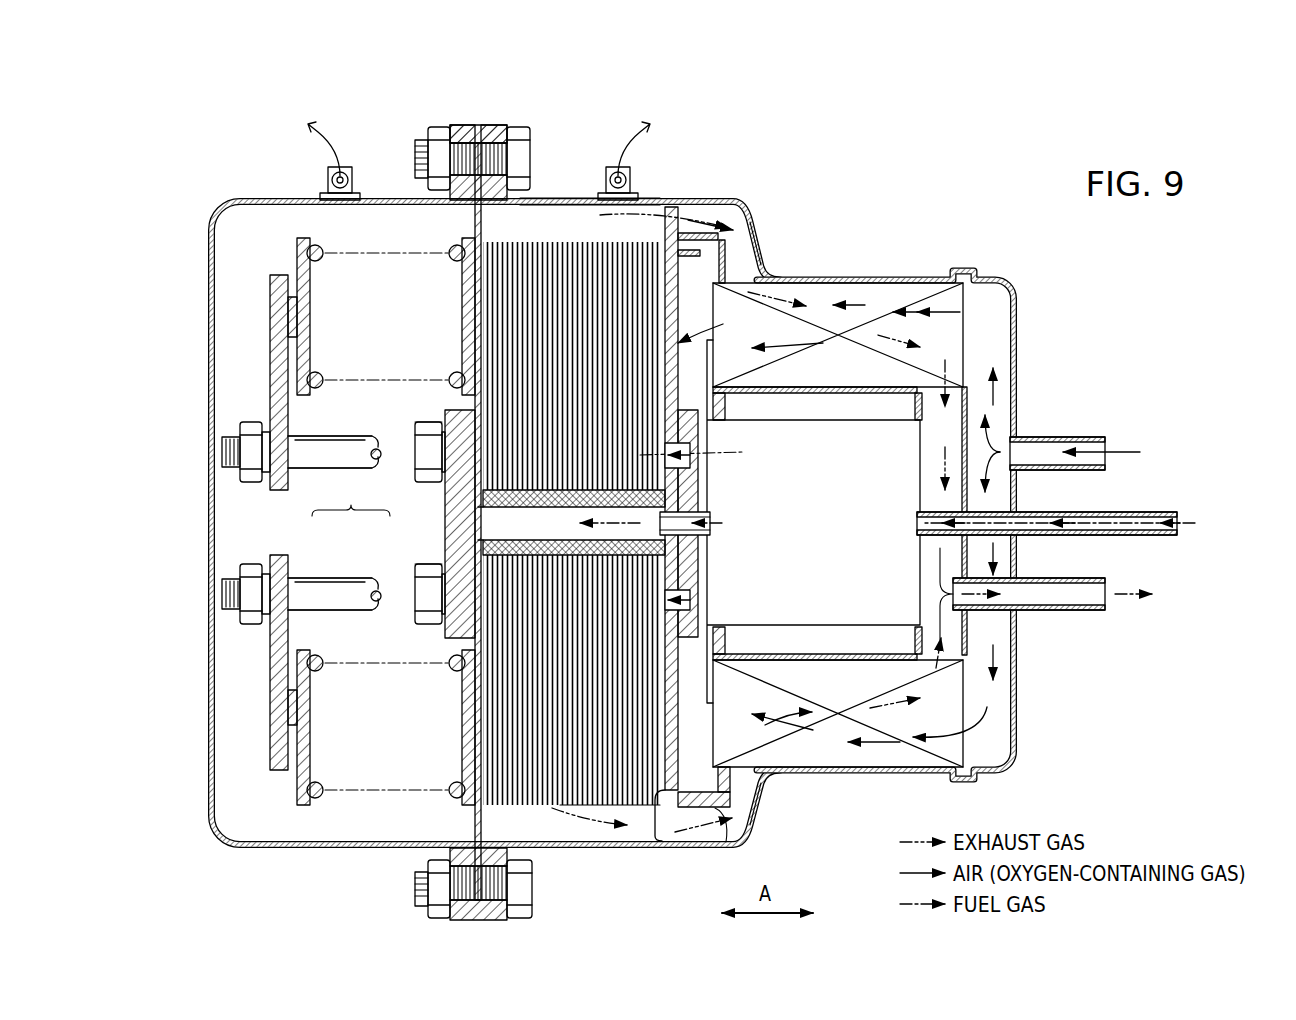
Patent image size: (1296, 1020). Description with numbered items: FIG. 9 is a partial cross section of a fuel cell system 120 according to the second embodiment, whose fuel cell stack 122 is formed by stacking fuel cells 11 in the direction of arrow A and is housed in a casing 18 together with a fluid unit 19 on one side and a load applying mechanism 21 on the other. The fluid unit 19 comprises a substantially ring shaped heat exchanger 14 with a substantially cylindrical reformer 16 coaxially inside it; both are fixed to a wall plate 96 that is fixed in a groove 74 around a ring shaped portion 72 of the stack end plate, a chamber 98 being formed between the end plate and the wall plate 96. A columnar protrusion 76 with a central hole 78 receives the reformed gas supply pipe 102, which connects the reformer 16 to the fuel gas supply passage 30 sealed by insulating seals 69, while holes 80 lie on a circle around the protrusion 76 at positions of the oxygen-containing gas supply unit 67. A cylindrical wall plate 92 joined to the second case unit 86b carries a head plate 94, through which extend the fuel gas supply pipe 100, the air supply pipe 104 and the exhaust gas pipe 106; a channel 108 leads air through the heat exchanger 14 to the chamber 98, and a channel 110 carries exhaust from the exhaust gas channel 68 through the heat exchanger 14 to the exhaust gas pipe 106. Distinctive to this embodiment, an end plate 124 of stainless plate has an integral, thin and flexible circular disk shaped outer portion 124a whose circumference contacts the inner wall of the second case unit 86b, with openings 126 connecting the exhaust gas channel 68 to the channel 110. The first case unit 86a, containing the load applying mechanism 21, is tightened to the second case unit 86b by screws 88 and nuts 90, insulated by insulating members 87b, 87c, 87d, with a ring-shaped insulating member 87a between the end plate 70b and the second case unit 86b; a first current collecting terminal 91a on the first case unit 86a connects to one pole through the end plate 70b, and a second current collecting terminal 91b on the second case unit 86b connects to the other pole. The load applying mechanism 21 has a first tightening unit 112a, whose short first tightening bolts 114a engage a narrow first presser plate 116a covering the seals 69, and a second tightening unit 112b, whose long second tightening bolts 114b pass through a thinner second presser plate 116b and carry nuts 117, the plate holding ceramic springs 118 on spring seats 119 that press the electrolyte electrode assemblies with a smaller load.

The fuel cells 11 is at (533, 800).
The heat exchanger 14 is at (912, 340).
The reformer 16 is at (840, 435).
The casing 18 is at (772, 263).
The fluid unit 19 is at (870, 226).
The load applying mechanism 21 is at (351, 499).
The fuel gas supply passage 30 is at (678, 470).
The oxygen-containing gas supply unit 67 is at (742, 455).
The exhaust gas channel 68 is at (592, 828).
The insulating seals 69 is at (500, 537).
The end plate 70b is at (474, 820).
The ring shaped portion 72 is at (746, 828).
The groove 74 is at (724, 843).
The columnar protrusion 76 is at (708, 537).
The hole 78 is at (708, 557).
The holes 80 is at (690, 600).
The first case unit 86a is at (262, 199).
The second case unit 86b is at (580, 198).
The ring-shaped insulating member 87a is at (479, 125).
The insulating member 87b is at (467, 123).
The insulating member 87c is at (505, 125).
The insulating member 87d is at (448, 123).
The screws 88 is at (518, 158).
The nuts 90 is at (438, 163).
The first current collecting terminal 91a is at (327, 178).
The second current collecting terminal 91b is at (636, 178).
The wall plate 92 is at (826, 773).
The head plate 94 is at (1018, 690).
The wall plate 96 is at (742, 254).
The chamber 98 is at (725, 786).
The fuel gas supply pipe 100 is at (1145, 512).
The reformed gas supply pipe 102 is at (712, 519).
The air supply pipe 104 is at (1058, 437).
The exhaust gas pipe 106 is at (1073, 610).
The channel 108 is at (987, 342).
The channel 110 is at (868, 708).
The first tightening unit 112a is at (442, 545).
The second tightening unit 112b is at (291, 640).
The first tightening bolts 114a is at (422, 455).
The second tightening bolts 114b is at (225, 452).
The first presser plate 116a is at (457, 505).
The second presser plate 116b is at (268, 367).
The nuts 117 is at (255, 572).
The springs 118 is at (316, 800).
The spring seats 119 is at (457, 745).
The fuel cell system 120 is at (1077, 248).
The fuel cell stack 122 is at (668, 232).
The end plate 124 is at (717, 324).
The outer portion 124a is at (652, 847).
The openings 126 is at (682, 222).